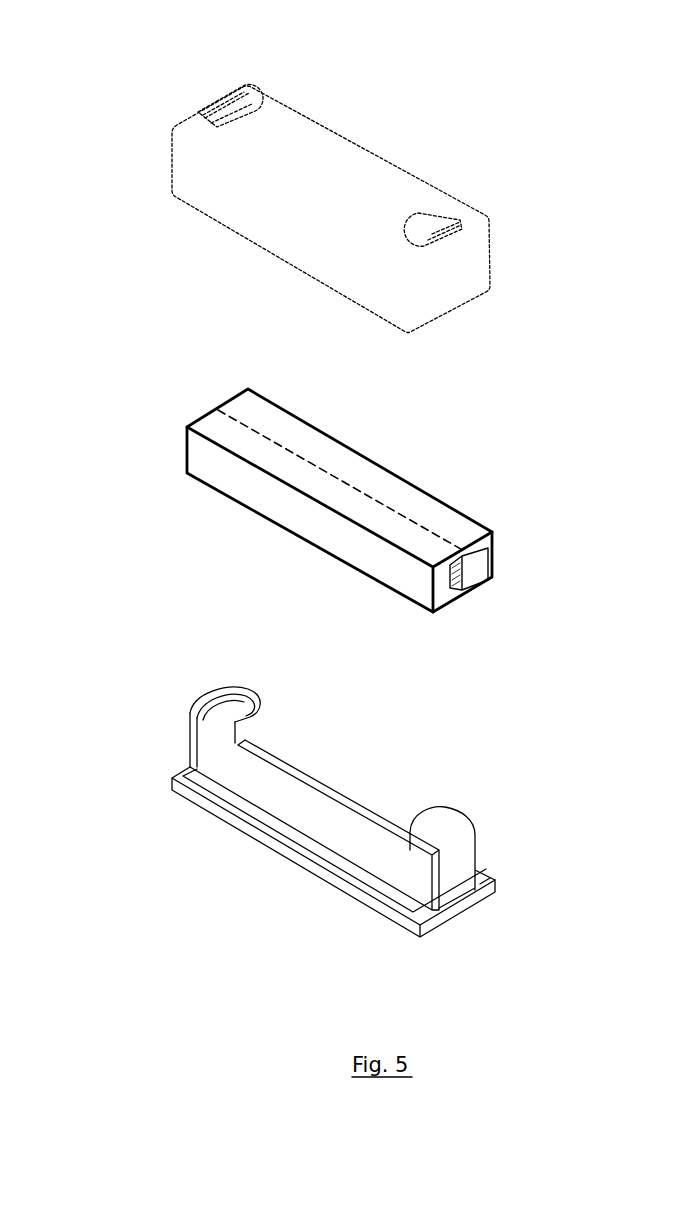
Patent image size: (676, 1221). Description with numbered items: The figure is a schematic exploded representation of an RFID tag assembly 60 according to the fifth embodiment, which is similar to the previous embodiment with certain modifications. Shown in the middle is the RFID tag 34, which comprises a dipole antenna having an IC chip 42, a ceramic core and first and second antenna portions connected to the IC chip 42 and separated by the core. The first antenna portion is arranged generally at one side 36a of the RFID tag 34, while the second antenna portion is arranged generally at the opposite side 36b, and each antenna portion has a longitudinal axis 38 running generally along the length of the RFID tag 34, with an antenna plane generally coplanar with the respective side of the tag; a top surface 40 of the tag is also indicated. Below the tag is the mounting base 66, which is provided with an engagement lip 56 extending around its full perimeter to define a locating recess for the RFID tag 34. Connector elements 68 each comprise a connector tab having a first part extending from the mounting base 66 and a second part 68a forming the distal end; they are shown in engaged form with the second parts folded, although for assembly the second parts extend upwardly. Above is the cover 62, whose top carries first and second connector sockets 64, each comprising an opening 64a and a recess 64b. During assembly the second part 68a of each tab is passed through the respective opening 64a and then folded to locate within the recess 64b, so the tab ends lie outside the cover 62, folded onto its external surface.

The RFID tag assembly 60 is at (119, 62).
The cover 62 is at (360, 172).
The connector socket 64 is at (437, 213).
The opening 64a is at (231, 110).
The recess 64b is at (252, 113).
The RFID tag 34 is at (238, 492).
The longitudinal axis 38 is at (252, 427).
The one side 36a is at (310, 557).
The opposite side 36b is at (366, 463).
The top surface 40 is at (415, 497).
The IC chip 42 is at (477, 573).
The engagement lip 56 is at (222, 828).
The mounting base 66 is at (312, 812).
The connector element 68 is at (452, 880).
The second part 68a is at (222, 718).